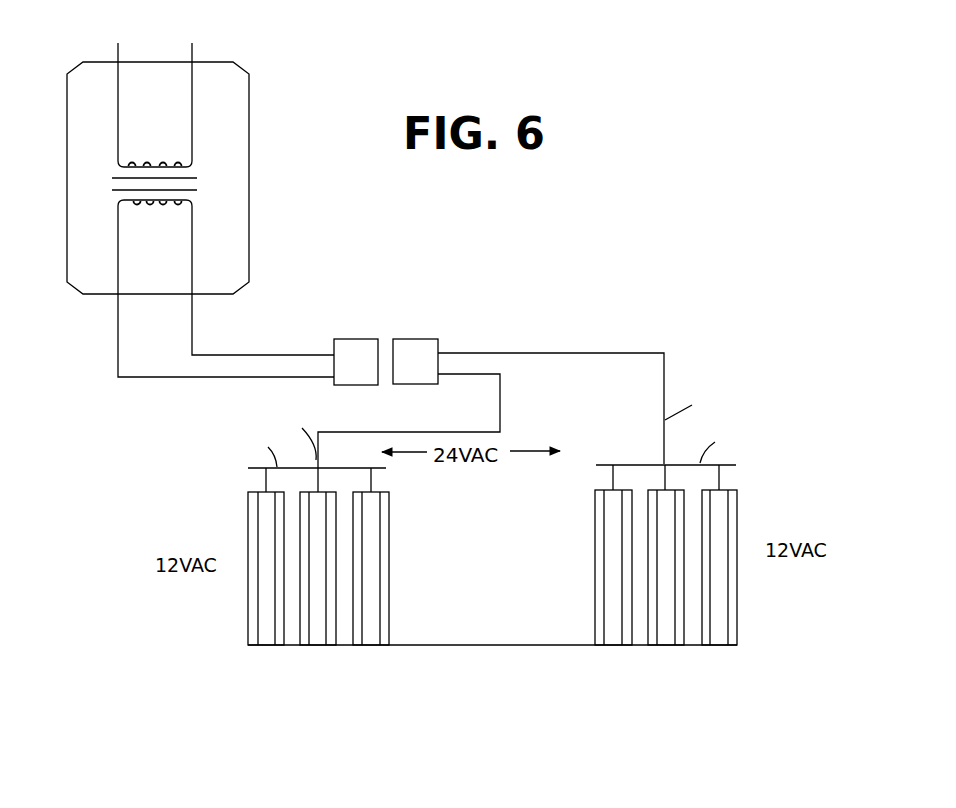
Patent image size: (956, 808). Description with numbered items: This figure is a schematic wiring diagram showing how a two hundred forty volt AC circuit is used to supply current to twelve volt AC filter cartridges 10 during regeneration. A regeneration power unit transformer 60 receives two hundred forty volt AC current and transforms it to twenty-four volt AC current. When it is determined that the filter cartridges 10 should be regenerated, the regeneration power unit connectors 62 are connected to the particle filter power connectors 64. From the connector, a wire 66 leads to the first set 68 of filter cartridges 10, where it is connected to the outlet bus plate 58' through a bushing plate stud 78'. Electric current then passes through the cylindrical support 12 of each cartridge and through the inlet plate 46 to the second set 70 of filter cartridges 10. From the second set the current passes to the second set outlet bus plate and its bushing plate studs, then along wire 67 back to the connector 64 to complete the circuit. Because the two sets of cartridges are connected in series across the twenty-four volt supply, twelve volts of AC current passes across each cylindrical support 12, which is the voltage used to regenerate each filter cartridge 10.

The regeneration power unit transformer 60 is at (250, 170).
The regeneration power unit connector 62 is at (358, 339).
The particle filter power connector 64 is at (422, 339).
The wire 66 is at (617, 351).
The wire 67 is at (430, 432).
The bushing plate stud 78' is at (695, 406).
The outlet bus plate 58' is at (724, 443).
The first set of filter cartridges 68 is at (768, 457).
The second set of filter cartridges 70 is at (216, 505).
The filter cartridge 10 is at (248, 607).
The cylindrical support 12 is at (266, 642).
The inlet plate 46 is at (483, 647).